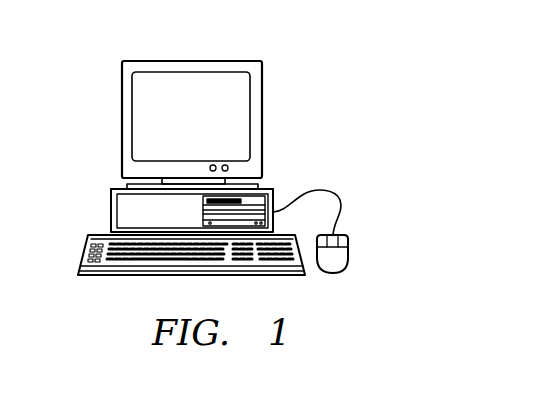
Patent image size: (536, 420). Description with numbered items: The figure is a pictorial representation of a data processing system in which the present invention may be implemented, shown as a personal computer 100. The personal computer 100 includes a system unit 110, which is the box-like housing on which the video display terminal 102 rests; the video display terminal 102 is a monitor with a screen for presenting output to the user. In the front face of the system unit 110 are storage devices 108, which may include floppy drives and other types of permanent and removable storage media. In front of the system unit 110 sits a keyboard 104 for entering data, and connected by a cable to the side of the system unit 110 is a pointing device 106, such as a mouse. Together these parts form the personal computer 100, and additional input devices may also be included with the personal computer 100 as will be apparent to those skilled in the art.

The personal computer 100 is at (324, 57).
The video display terminal 102 is at (138, 122).
The keyboard 104 is at (108, 255).
The pointing device 106 is at (332, 274).
The storage devices 108 is at (269, 195).
The system unit 110 is at (111, 212).